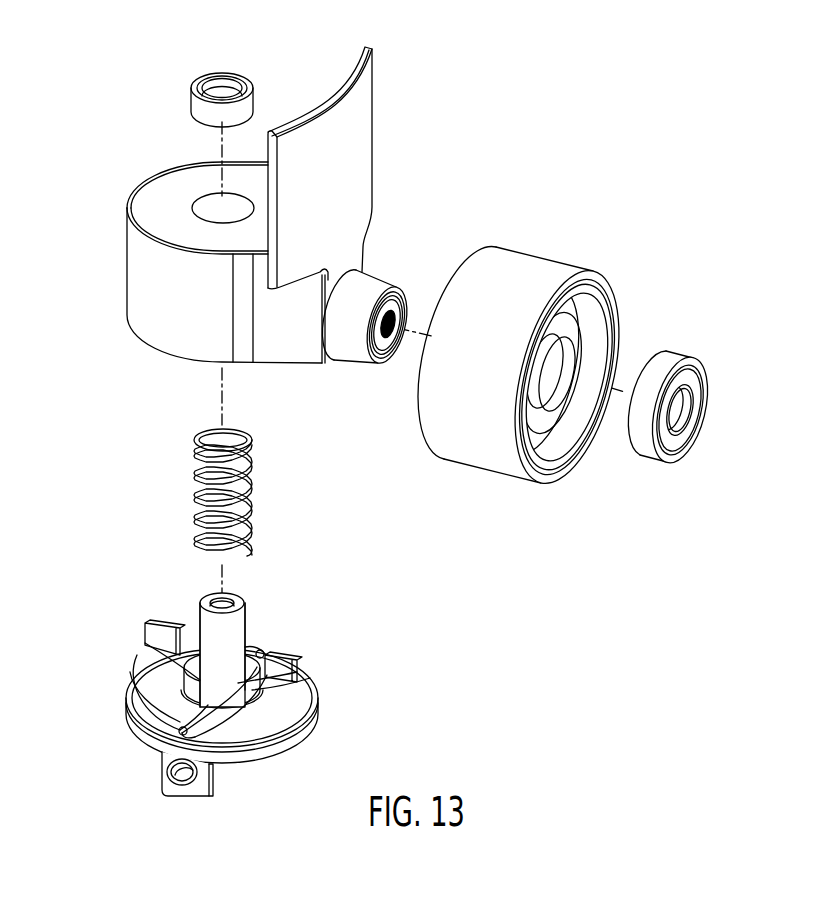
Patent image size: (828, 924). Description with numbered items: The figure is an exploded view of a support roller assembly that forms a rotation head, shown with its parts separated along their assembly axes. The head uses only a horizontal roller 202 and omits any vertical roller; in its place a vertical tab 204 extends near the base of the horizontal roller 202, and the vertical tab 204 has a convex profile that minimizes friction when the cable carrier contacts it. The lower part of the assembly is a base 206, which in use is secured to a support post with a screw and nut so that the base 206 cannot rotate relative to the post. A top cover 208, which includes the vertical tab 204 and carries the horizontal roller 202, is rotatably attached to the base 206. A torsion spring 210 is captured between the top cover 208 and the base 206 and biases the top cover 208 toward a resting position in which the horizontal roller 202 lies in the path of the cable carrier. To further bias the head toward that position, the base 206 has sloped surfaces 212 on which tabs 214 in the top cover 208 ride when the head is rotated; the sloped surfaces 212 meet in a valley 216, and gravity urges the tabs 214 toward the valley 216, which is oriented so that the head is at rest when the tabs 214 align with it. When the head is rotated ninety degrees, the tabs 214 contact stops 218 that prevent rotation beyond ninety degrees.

The horizontal roller 202 is at (540, 270).
The vertical tab 204 is at (363, 115).
The base 206 is at (297, 737).
The top cover 208 is at (139, 279).
The torsion spring 210 is at (248, 512).
The sloped surfaces 212 is at (262, 690).
The tabs 214 is at (158, 680).
The valley 216 is at (260, 652).
The stops 218 is at (155, 623).